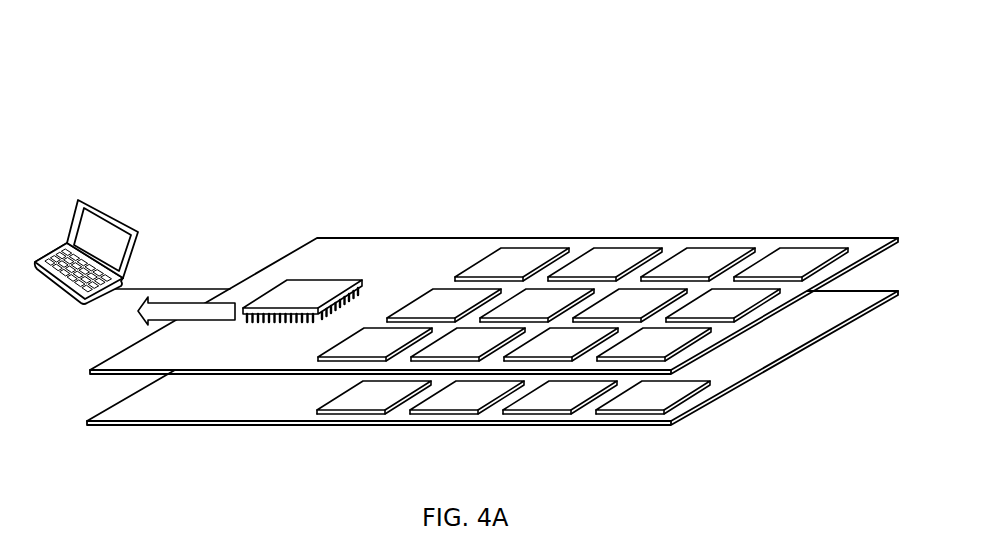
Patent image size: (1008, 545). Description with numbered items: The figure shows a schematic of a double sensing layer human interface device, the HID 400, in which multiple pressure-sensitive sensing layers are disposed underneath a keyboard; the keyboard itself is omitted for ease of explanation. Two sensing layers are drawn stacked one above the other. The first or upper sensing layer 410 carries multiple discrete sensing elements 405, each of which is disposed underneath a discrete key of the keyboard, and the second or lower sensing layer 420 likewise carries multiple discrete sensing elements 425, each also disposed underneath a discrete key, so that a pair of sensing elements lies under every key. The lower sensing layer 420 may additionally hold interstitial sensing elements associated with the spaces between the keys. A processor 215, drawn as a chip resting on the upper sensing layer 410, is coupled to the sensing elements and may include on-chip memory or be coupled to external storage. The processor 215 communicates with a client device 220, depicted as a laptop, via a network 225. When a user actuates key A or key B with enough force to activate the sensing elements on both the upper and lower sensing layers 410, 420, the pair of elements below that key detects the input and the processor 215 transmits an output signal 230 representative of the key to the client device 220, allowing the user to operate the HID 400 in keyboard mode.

The HID 400 is at (142, 38).
The client device 220 is at (110, 211).
The network 225 is at (124, 290).
The output signal 230 is at (205, 321).
The processor 215 is at (335, 278).
The upper sensing layer 410 is at (384, 238).
The lower sensing layer 420 is at (823, 338).
The sensing elements 405 is at (842, 222).
The sensing elements 425 is at (665, 446).